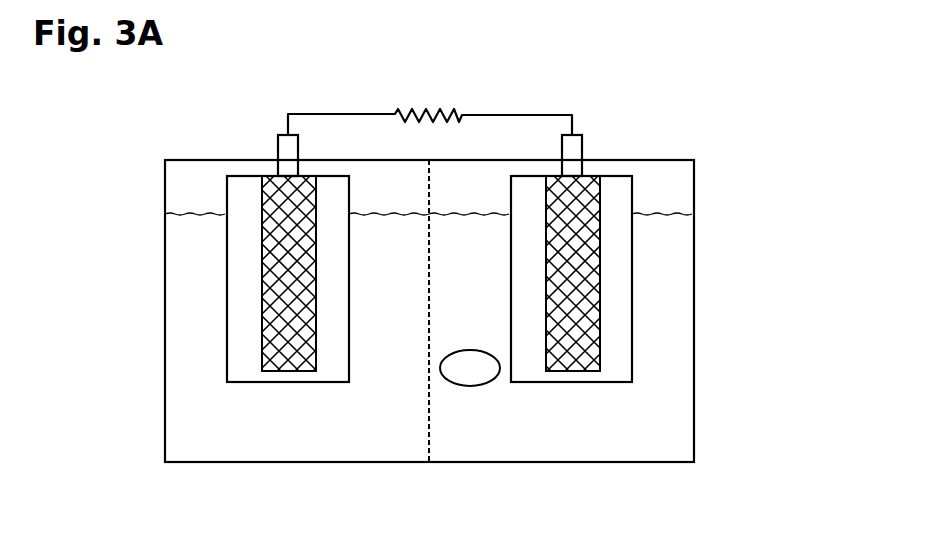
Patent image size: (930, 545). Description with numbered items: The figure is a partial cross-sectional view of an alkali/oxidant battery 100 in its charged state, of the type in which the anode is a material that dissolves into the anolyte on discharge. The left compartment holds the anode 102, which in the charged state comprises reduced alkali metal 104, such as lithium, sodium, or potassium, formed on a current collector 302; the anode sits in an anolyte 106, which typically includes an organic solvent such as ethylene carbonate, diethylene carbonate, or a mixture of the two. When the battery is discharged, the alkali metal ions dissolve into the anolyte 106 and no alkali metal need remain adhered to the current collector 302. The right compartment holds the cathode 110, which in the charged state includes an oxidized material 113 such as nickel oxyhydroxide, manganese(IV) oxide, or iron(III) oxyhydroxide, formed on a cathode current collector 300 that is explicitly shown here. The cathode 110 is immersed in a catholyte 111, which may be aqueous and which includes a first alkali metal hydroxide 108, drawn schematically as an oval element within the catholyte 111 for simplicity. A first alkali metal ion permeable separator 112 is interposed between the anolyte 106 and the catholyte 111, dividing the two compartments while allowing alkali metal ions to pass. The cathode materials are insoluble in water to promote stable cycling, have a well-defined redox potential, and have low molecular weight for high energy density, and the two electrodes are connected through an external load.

The battery 100 is at (633, 98).
The anode 102 is at (191, 273).
The reduced first alkali metal 104 is at (233, 285).
The anolyte 106 is at (307, 451).
The first alkali metal hydroxide 108 is at (488, 379).
The cathode 110 is at (667, 273).
The catholyte 111 is at (587, 451).
The first alkali metal ion permeable separator 112 is at (429, 432).
The oxidized material 113 is at (622, 290).
The cathode current collector 300 is at (587, 319).
The current collector 302 is at (273, 319).